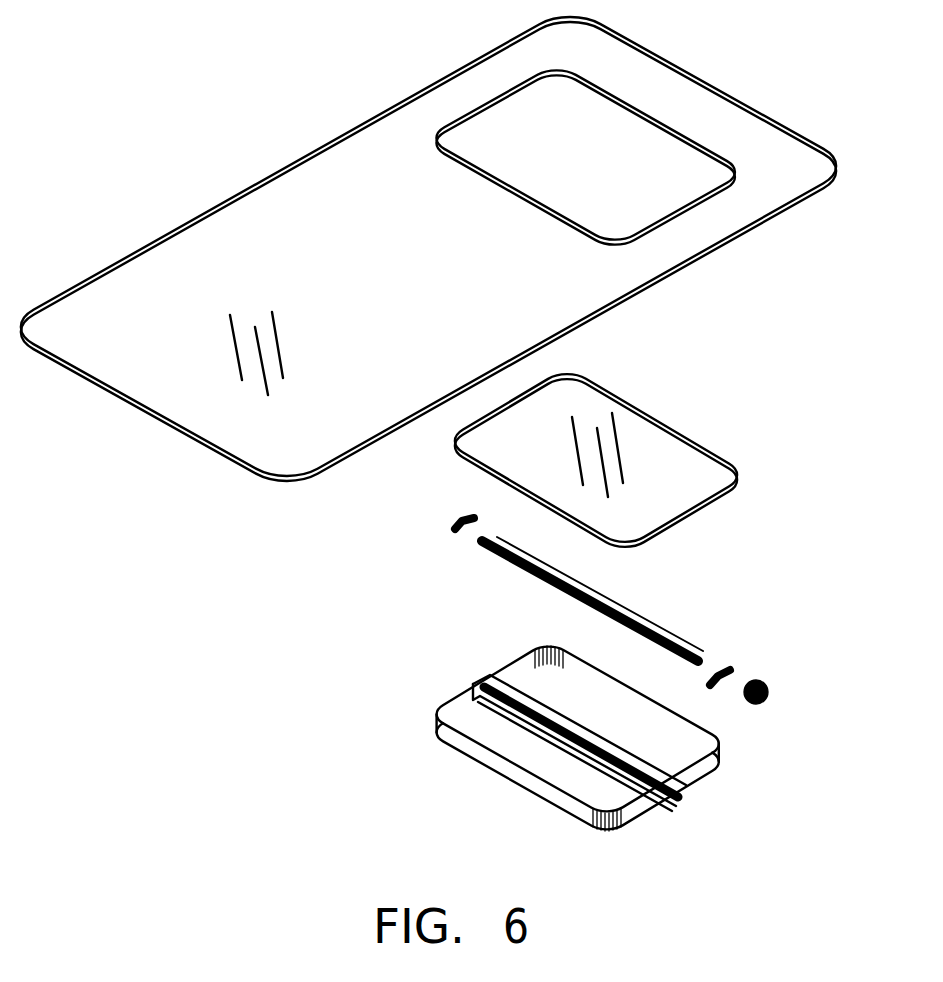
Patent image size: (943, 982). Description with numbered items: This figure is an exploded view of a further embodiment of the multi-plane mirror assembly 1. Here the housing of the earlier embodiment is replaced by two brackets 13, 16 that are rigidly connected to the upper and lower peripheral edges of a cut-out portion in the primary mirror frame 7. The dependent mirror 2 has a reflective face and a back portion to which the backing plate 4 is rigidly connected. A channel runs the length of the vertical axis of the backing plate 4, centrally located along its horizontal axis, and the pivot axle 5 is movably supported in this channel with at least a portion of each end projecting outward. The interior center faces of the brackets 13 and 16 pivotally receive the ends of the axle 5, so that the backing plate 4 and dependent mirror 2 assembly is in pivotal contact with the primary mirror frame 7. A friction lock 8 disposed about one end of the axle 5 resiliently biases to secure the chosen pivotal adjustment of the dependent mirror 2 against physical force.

The multi-plane mirror assembly 1 is at (372, 90).
The primary mirror frame 7 is at (688, 260).
The dependent mirror 2 is at (627, 400).
The bracket 16 is at (450, 523).
The pivot axle 5 is at (530, 577).
The friction lock 8 is at (727, 663).
The bracket 13 is at (768, 689).
The backing plate 4 is at (722, 760).